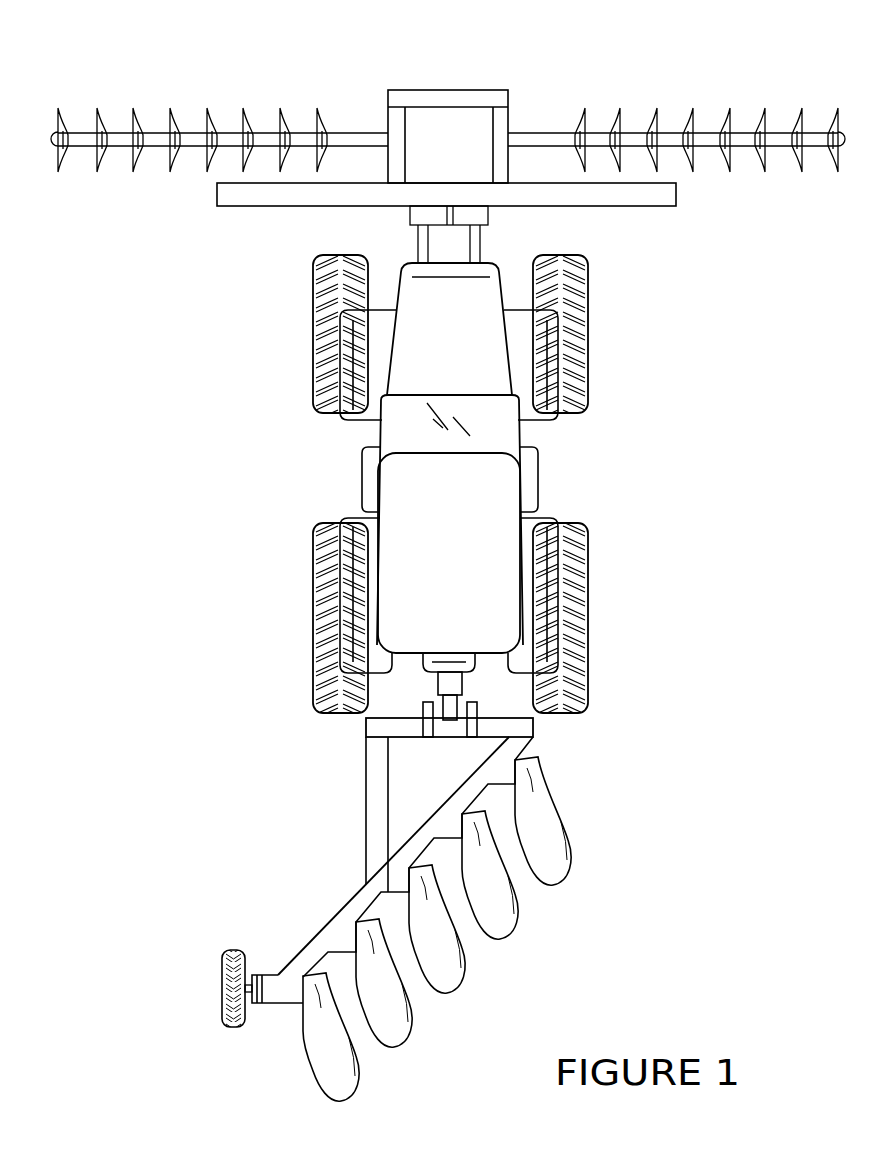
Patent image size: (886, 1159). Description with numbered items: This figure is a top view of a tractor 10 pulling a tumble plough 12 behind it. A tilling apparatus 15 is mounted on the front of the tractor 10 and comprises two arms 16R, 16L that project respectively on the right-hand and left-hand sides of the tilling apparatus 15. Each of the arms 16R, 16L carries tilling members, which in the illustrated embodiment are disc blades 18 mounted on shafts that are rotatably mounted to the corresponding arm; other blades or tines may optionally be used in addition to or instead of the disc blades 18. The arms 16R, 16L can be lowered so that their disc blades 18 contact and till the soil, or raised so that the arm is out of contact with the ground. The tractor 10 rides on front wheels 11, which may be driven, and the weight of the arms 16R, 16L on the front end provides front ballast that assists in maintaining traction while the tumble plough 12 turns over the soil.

The tractor 10 is at (478, 500).
The front wheels 11 is at (333, 297).
The tumble plough 12 is at (565, 810).
The tilling apparatus 15 is at (690, 43).
The left arm 16L is at (187, 142).
The right arm 16R is at (738, 143).
The disc blades 18 is at (133, 112).